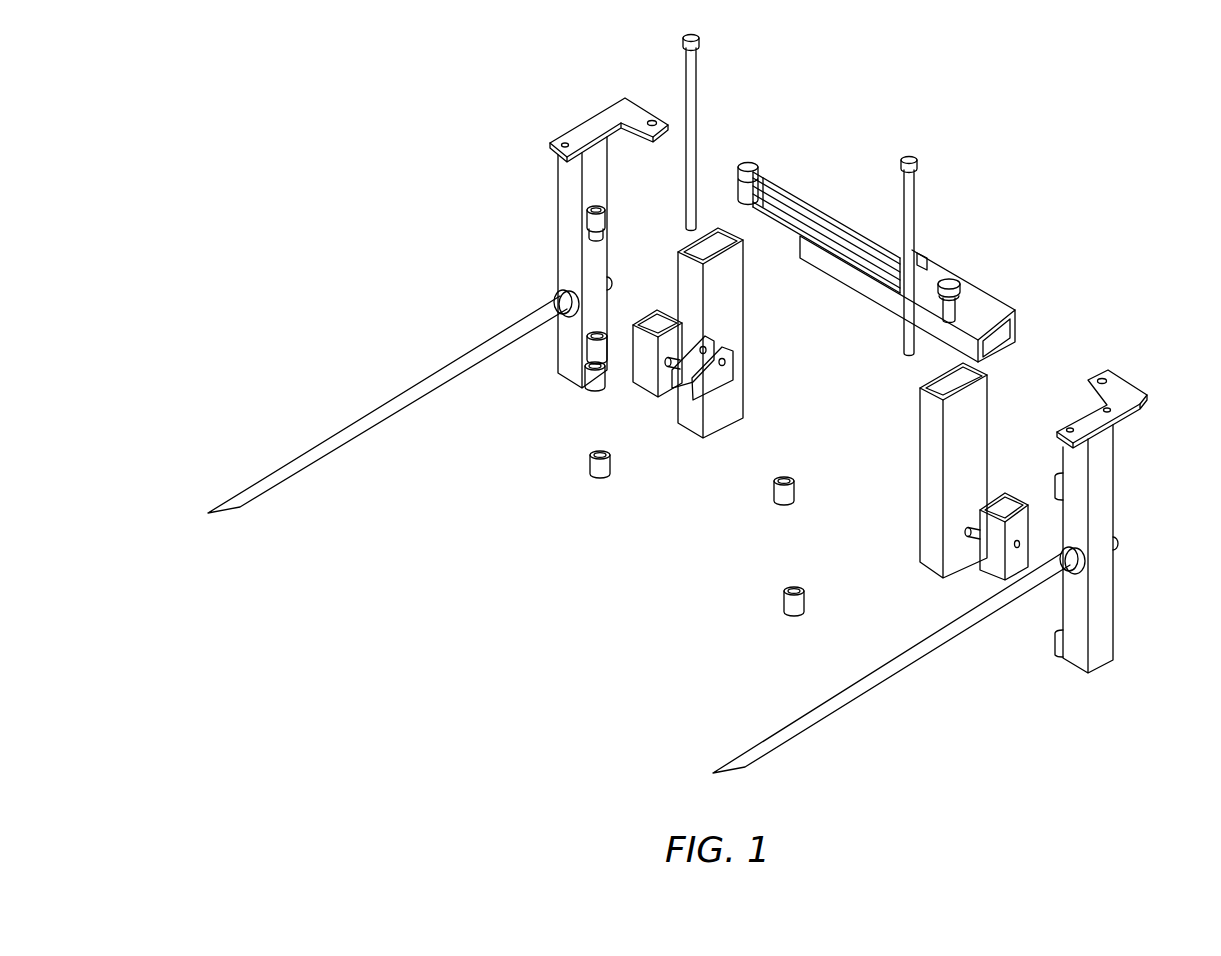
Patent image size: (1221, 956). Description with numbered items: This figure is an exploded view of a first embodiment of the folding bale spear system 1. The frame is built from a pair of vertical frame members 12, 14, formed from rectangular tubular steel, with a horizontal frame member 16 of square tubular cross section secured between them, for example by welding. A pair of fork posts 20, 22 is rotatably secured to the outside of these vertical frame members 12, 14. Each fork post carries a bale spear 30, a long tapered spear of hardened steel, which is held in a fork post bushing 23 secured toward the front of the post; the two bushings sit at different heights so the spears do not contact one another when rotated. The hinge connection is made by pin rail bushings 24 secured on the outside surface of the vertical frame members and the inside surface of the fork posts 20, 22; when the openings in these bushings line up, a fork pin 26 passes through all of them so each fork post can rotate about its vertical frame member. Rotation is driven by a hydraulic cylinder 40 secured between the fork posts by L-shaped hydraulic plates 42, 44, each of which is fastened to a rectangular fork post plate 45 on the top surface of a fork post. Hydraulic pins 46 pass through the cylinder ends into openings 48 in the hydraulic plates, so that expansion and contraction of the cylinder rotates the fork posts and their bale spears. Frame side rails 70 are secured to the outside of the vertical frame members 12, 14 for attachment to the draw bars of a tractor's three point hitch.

The folding bale spear system 1 is at (1076, 177).
The vertical frame member 12 is at (930, 483).
The vertical frame member 14 is at (748, 311).
The horizontal frame member 16 is at (941, 268).
The fork post 20 is at (1105, 473).
The fork post 22 is at (567, 273).
The fork post bushing 23 is at (558, 292).
The pin rail bushing 24 is at (590, 214).
The fork pin 26 is at (700, 116).
The bale spear 30 is at (355, 424).
The hydraulic cylinder 40 is at (771, 163).
The hydraulic plate 42 is at (1133, 390).
The hydraulic plate 44 is at (598, 118).
The fork post plate 45 is at (557, 143).
The hydraulic pin 46 is at (963, 300).
The opening 48 is at (655, 120).
The frame side rail 70 is at (634, 335).